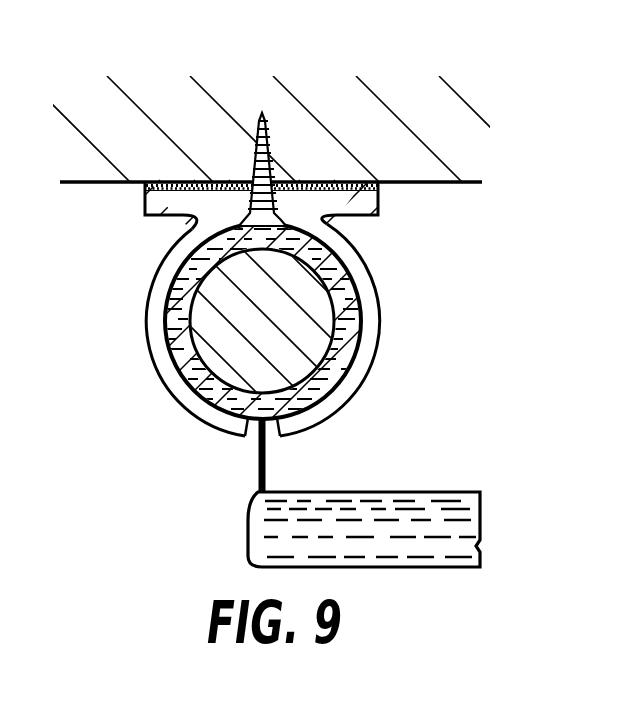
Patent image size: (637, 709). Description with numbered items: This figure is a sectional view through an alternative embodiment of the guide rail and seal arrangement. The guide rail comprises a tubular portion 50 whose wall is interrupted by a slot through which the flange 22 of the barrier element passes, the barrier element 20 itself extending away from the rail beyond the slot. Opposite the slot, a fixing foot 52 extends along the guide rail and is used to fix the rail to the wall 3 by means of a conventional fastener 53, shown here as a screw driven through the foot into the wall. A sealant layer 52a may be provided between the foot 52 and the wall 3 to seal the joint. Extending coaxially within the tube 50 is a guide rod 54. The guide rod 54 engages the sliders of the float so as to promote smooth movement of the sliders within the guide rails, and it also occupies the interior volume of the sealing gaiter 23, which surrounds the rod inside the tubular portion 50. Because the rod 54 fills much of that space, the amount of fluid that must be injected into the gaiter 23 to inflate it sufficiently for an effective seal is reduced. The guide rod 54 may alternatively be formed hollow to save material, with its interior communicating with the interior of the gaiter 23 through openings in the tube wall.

The wall 3 is at (445, 143).
The rail 20 is at (427, 568).
The flange 22 is at (258, 462).
The sealing gaiter 23 is at (163, 333).
The tubular portion 50 is at (181, 397).
The fixing foot 52 is at (157, 216).
The sealant layer 52a is at (168, 185).
The fastener 53 is at (265, 138).
The guide rod 54 is at (282, 348).